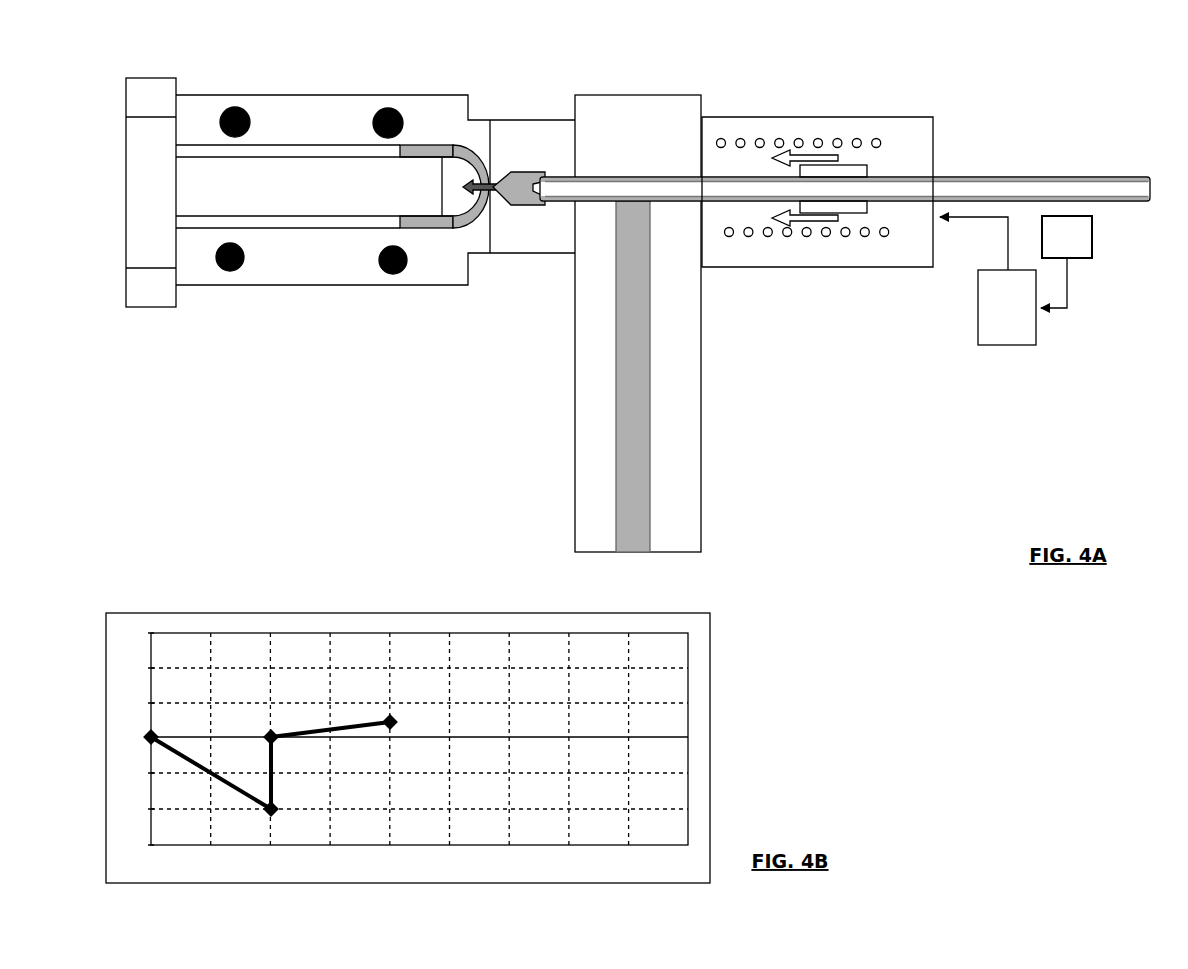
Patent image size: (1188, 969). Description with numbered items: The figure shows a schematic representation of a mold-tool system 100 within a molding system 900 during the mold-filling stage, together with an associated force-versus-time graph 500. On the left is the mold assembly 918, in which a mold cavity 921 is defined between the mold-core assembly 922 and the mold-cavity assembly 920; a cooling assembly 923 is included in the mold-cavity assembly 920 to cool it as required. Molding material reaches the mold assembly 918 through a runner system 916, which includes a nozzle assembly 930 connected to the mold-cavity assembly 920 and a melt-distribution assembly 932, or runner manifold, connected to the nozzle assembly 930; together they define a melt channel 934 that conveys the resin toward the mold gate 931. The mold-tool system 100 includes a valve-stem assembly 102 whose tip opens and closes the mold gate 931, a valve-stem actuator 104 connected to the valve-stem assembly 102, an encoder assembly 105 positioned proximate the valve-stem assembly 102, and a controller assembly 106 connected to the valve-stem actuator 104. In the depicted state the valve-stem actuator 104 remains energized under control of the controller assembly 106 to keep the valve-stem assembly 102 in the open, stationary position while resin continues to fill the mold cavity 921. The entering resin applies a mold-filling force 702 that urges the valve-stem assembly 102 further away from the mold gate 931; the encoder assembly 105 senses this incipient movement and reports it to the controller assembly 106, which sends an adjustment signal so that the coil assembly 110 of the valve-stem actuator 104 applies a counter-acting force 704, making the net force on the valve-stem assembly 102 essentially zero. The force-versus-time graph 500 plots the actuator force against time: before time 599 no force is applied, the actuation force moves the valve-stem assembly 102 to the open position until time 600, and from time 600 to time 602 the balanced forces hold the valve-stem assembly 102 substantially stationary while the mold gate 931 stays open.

In FIG. 4A, the molding system 900 is at (596, 299).
In FIG. 4A, the mold assembly 918 is at (62, 272).
In FIG. 4A, the mold-cavity assembly 920 is at (300, 263).
In FIG. 4A, the mold cavity 921 is at (193, 153).
In FIG. 4A, the mold-core assembly 922 is at (206, 190).
In FIG. 4A, the cooling assembly 923 is at (388, 262).
In FIG. 4A, the mold-filling force 702 is at (488, 175).
In FIG. 4A, the runner system 916 is at (494, 309).
In FIG. 4A, the nozzle assembly 930 is at (536, 228).
In FIG. 4A, the melt-distribution assembly 932 is at (594, 373).
In FIG. 4A, the melt channel 934 is at (620, 494).
In FIG. 4A, the mold gate 931 is at (492, 178).
In FIG. 4A, the mold-tool system 100 is at (845, 287).
In FIG. 4A, the valve-stem assembly 102 is at (1143, 198).
In FIG. 4A, the valve-stem actuator 104 is at (817, 247).
In FIG. 4A, the coil assembly 110 is at (748, 236).
In FIG. 4A, the counter-acting force 704 is at (812, 157).
In FIG. 4A, the encoder assembly 105 is at (1066, 262).
In FIG. 4A, the controller assembly 106 is at (997, 342).
In FIG. 4B, the force-versus-time graph 500 is at (458, 731).
In FIG. 4B, the time 599 is at (153, 647).
In FIG. 4B, the time 600 is at (268, 647).
In FIG. 4B, the time 602 is at (390, 647).